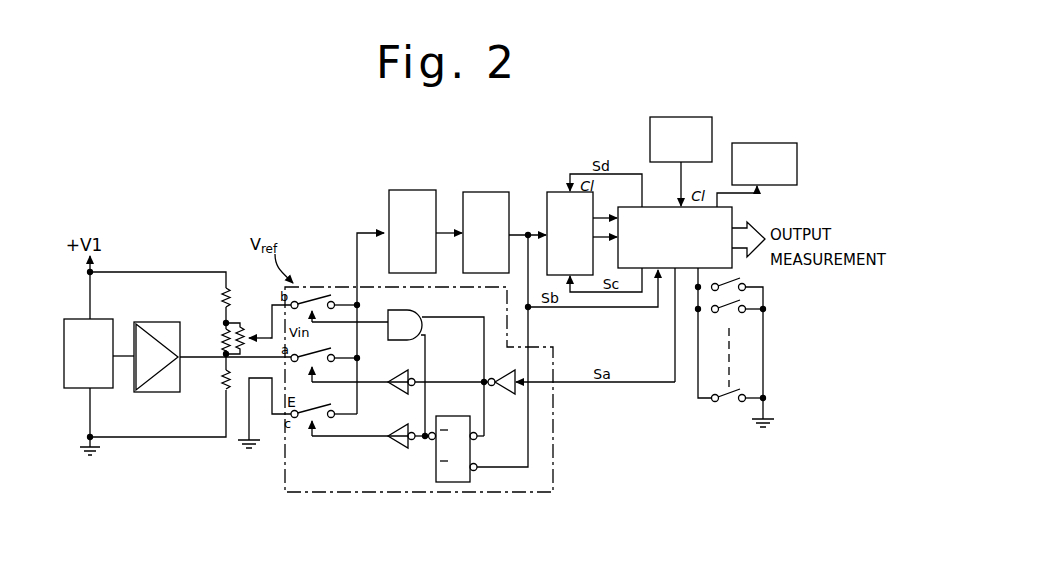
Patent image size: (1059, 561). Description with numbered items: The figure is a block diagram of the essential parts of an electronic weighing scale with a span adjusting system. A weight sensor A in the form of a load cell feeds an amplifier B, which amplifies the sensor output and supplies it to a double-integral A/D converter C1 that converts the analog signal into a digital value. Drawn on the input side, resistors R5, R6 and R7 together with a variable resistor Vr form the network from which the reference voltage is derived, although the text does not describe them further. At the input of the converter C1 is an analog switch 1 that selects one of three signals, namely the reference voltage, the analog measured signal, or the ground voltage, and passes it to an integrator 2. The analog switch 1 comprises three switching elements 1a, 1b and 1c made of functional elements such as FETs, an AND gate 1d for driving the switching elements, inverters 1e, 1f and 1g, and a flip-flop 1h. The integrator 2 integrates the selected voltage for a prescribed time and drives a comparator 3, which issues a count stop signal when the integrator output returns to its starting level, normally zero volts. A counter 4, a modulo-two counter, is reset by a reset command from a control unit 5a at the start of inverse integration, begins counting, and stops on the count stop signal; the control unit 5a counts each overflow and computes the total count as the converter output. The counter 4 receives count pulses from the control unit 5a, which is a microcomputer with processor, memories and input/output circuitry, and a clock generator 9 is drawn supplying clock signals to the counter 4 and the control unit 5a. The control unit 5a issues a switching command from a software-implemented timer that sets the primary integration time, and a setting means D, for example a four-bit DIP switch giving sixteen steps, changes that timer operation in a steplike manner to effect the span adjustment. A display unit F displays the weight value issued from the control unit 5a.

The analog switch 1 is at (324, 327).
The switching element 1a is at (329, 353).
The switching element 1b is at (313, 284).
The switching element 1c is at (326, 409).
The AND gate 1d is at (419, 312).
The inverter 1e is at (396, 369).
The inverter 1f is at (505, 369).
The inverter 1g is at (396, 423).
The flip-flop 1h is at (455, 416).
The integrator 2 is at (417, 190).
The comparator 3 is at (492, 192).
The counter 4 is at (561, 192).
The control unit 5a is at (723, 218).
The clock generator 9 is at (712, 140).
The weight sensor A is at (88, 353).
The amplifier B is at (157, 357).
The display unit F is at (764, 164).
The resistor R5 is at (212, 297).
The resistor R6 is at (212, 341).
The resistor R7 is at (212, 381).
The variable resistor Vr is at (248, 333).
The double-integral A/D converter C1 is at (606, 406).
The setting means D is at (728, 416).